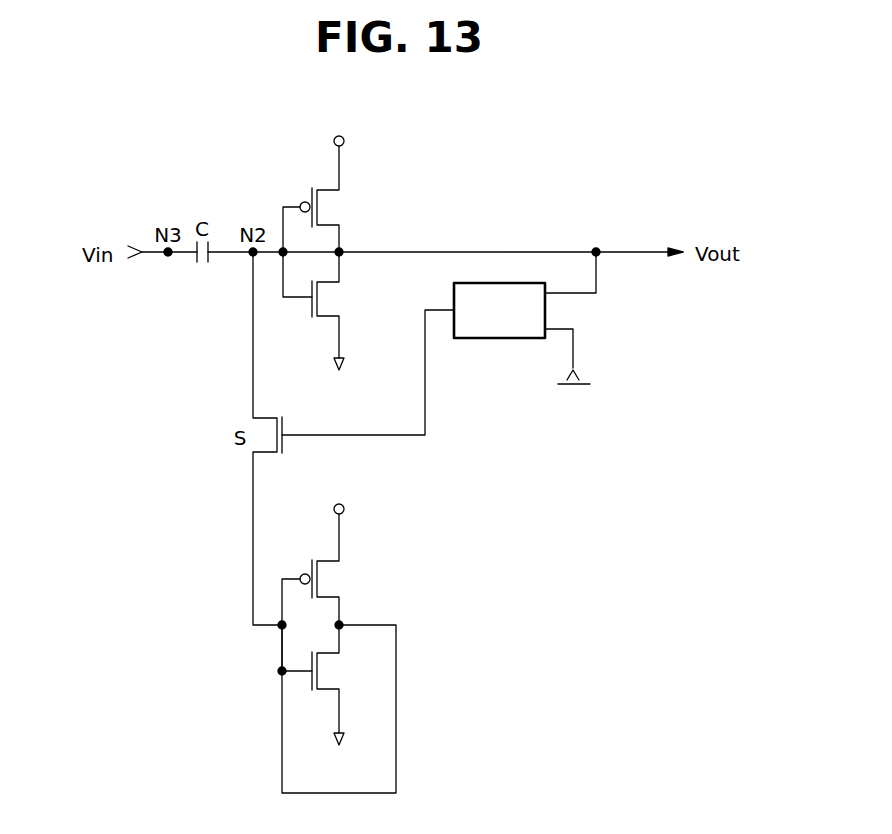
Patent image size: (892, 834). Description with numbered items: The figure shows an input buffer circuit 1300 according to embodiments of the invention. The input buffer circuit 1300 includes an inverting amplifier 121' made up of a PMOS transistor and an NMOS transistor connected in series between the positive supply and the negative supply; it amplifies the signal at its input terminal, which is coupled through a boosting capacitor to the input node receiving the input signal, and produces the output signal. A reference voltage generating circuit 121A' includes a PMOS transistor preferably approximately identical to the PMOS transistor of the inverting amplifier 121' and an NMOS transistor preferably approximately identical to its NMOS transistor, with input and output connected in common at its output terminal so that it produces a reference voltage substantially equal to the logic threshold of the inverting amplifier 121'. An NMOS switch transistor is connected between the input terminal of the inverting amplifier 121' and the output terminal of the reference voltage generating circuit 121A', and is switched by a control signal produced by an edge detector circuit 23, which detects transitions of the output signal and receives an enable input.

The inverting amplifier 121' is at (404, 255).
The reference voltage generating circuit 121A' is at (393, 633).
The edge detector circuit 23 is at (497, 340).
The input buffer circuit 1300 is at (745, 191).